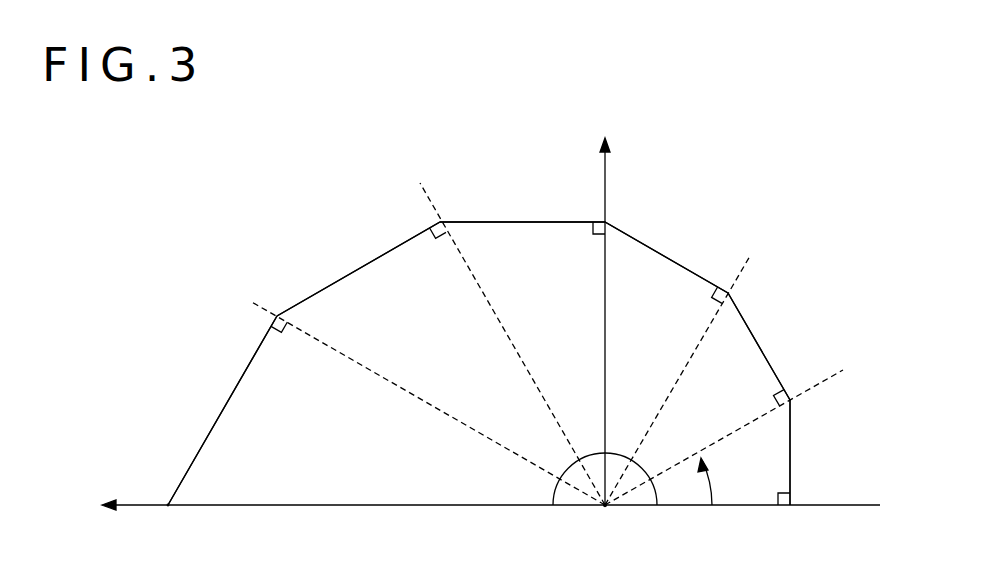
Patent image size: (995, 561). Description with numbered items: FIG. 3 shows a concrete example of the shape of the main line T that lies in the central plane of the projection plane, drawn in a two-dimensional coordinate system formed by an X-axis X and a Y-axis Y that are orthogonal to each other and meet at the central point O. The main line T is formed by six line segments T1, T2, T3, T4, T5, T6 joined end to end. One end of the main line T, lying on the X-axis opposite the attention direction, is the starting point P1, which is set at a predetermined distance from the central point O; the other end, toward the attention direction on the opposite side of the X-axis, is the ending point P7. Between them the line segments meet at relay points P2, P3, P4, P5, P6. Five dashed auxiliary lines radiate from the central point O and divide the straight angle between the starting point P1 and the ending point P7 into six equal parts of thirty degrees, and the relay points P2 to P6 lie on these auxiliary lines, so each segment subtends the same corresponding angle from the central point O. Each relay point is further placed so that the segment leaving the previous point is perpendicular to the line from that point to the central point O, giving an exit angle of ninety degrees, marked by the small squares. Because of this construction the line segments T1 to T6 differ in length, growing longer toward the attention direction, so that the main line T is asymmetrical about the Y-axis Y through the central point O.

The main line T is at (670, 208).
The line segment T1 is at (792, 458).
The line segment T2 is at (766, 353).
The line segment T3 is at (680, 265).
The line segment T4 is at (527, 222).
The line segment T5 is at (379, 258).
The line segment T6 is at (225, 403).
The starting point P1 is at (788, 518).
The relay point P2 is at (796, 409).
The relay point P3 is at (736, 297).
The relay point P4 is at (612, 220).
The relay point P5 is at (446, 214).
The relay point P6 is at (272, 307).
The ending point P7 is at (165, 523).
The central point O is at (605, 522).
The X-axis X is at (479, 507).
The Y-axis Y is at (603, 304).